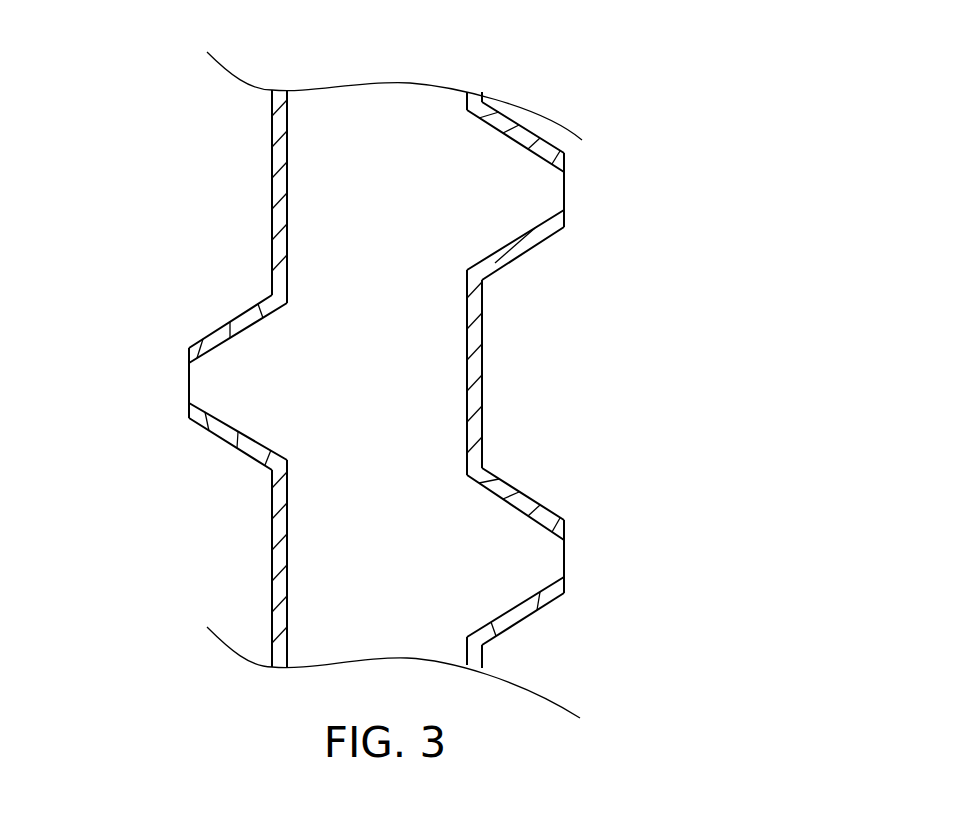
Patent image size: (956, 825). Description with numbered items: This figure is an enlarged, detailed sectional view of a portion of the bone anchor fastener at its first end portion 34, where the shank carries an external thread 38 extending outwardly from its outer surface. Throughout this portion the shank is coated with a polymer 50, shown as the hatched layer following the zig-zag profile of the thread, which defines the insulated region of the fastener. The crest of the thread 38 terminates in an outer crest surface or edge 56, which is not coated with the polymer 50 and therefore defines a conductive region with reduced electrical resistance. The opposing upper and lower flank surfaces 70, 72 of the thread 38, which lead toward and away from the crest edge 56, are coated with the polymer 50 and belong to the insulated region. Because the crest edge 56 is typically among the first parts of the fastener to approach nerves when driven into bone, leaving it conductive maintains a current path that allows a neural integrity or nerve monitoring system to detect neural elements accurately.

The first end portion 34 is at (382, 390).
The polymer 50 is at (523, 127).
The external thread 38 is at (527, 202).
The outer crest surface or edge 56 is at (564, 190).
The upper flank surface 70 is at (515, 498).
The lower flank surface 72 is at (512, 613).